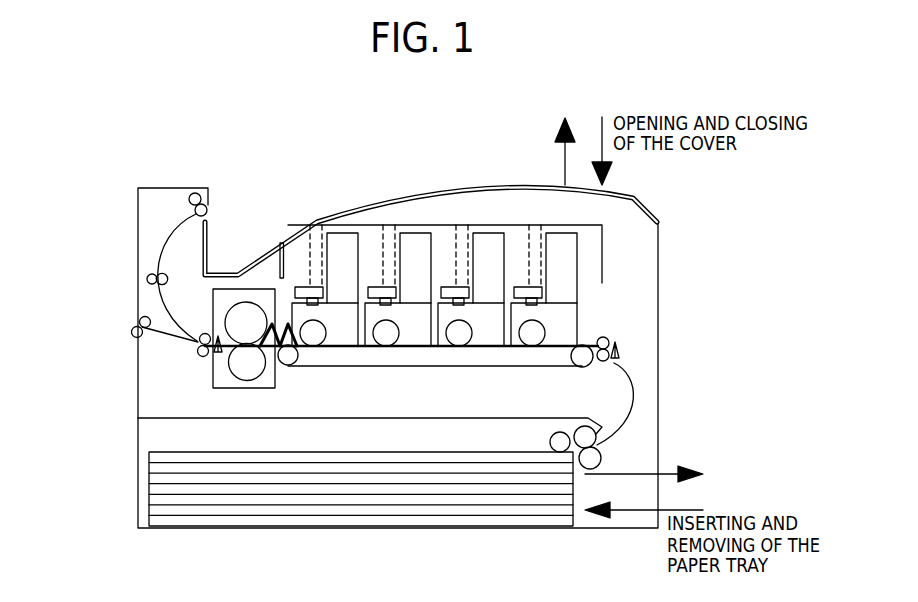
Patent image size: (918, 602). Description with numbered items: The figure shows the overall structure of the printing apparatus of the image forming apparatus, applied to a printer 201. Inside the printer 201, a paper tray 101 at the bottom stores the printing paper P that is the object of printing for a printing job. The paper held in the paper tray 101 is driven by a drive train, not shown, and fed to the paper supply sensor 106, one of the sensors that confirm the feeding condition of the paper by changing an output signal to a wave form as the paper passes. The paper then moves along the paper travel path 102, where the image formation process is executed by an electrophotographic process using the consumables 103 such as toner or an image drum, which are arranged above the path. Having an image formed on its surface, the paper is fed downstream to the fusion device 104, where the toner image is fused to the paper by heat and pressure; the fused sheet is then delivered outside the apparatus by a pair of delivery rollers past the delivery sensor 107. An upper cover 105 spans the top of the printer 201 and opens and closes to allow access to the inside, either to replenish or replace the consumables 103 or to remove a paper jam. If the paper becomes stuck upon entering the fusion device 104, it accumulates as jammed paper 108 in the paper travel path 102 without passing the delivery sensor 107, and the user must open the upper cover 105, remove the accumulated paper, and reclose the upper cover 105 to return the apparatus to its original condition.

The printer 201 is at (492, 111).
The paper tray 101 is at (330, 498).
The paper travel path 102 is at (580, 345).
The consumables 103 is at (563, 253).
The fusion device 104 is at (247, 298).
The upper cover 105 is at (523, 192).
The paper supply sensor 106 is at (617, 351).
The delivery sensor 107 is at (217, 353).
The jammed paper 108 is at (282, 323).